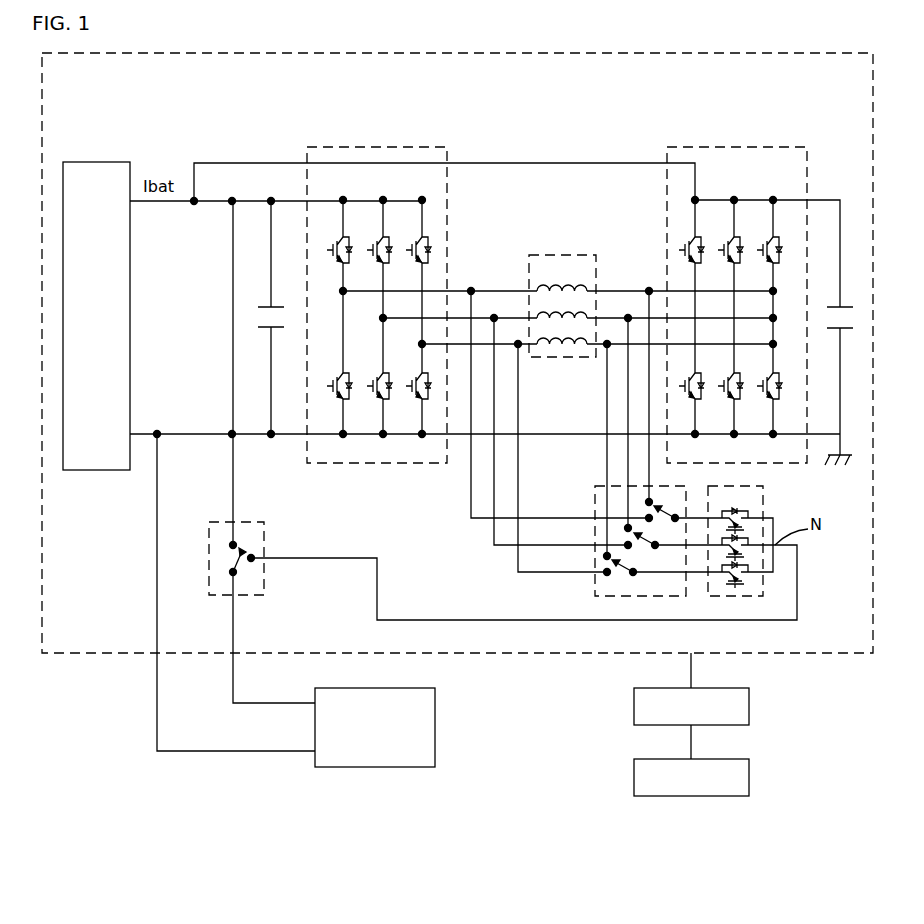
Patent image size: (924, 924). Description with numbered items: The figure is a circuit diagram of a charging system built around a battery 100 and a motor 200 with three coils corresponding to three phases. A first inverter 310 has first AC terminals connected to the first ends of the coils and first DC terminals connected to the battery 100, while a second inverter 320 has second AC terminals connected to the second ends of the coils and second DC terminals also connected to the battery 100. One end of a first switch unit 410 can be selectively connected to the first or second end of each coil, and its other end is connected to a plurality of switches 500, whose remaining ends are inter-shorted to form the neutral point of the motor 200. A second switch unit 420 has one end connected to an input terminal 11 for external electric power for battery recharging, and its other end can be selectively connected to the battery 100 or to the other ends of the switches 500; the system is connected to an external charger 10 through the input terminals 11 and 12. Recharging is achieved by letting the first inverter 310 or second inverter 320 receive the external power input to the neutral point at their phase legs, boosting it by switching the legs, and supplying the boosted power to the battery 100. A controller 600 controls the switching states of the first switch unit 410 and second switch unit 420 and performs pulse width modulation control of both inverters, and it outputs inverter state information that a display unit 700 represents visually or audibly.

The battery 100 is at (96, 316).
The first inverter 310 is at (423, 147).
The second inverter 320 is at (783, 147).
The motor 200 is at (573, 255).
The first switch unit 410 is at (594, 500).
The second switch unit 420 is at (265, 540).
The plurality of switches 500 is at (765, 508).
The input terminal 11 is at (234, 653).
The input terminal 12 is at (160, 653).
The external charger 10 is at (355, 727).
The controller 600 is at (691, 706).
The display unit 700 is at (691, 777).